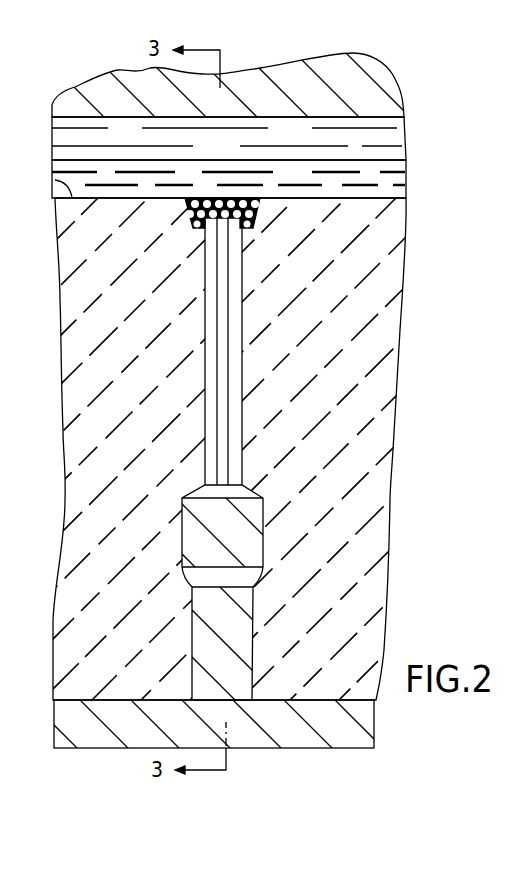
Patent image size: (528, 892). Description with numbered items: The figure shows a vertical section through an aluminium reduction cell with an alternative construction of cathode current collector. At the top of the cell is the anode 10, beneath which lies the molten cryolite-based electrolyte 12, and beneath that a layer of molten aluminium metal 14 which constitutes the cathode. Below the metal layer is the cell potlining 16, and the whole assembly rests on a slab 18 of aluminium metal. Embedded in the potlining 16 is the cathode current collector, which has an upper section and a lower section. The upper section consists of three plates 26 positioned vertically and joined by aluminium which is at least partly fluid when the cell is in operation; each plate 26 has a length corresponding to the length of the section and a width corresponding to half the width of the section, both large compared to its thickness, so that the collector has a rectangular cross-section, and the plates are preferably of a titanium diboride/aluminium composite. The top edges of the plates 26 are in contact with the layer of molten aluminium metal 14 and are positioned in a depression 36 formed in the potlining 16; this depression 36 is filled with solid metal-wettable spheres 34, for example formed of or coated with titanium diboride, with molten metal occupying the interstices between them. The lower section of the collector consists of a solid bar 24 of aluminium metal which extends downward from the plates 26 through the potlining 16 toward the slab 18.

The anode 10 is at (392, 76).
The molten cryolite-based electrolyte 12 is at (377, 143).
The layer of molten aluminium metal 14 is at (390, 180).
The cell potlining 16 is at (57, 181).
The slab of aluminium metal 18 is at (353, 723).
The solid bar of aluminium metal 24 is at (228, 627).
The plates 26 is at (236, 328).
The metal-wettable spheres 34 is at (204, 197).
The depression 36 is at (187, 210).